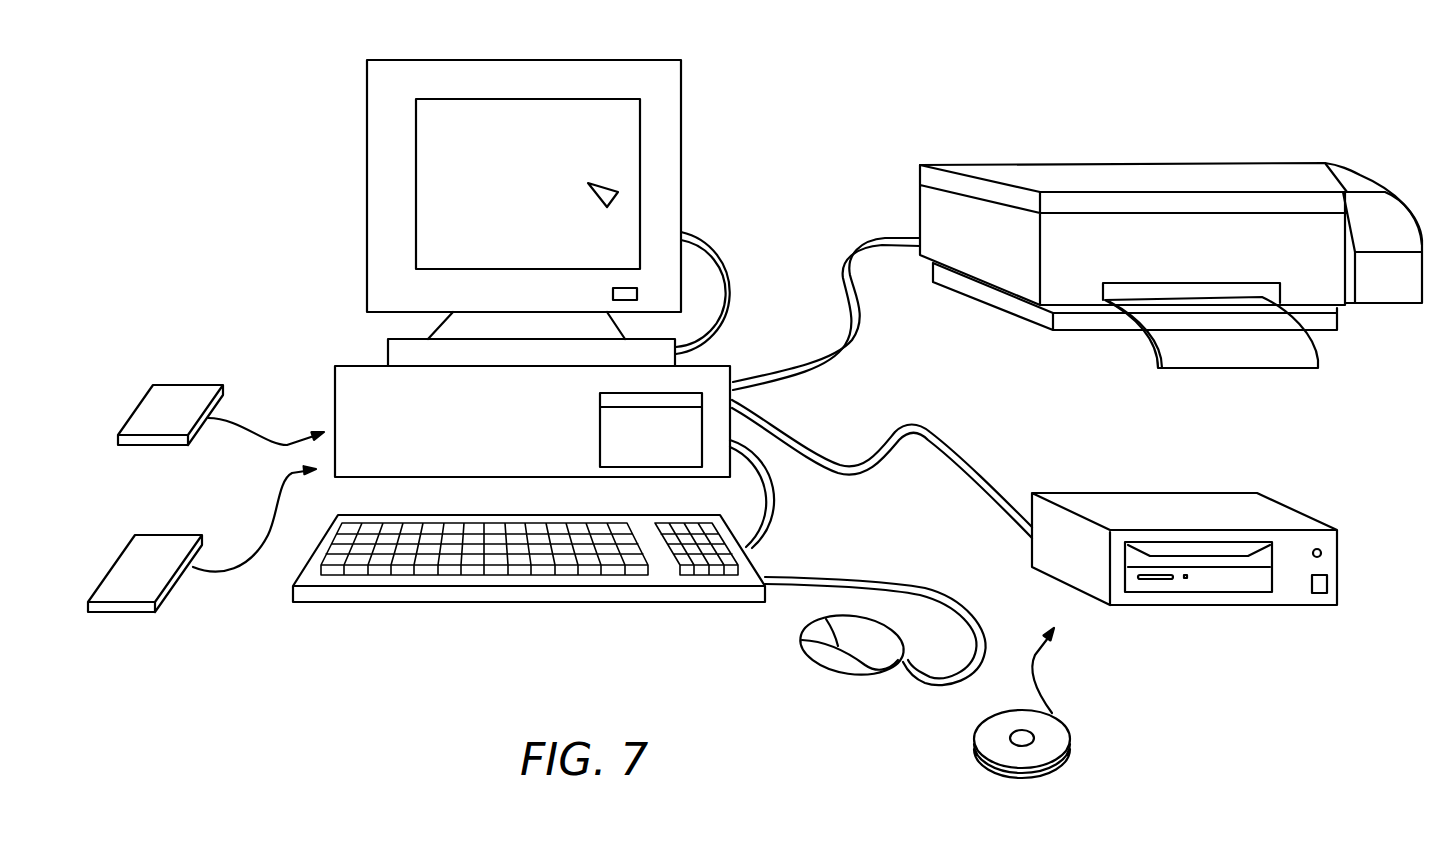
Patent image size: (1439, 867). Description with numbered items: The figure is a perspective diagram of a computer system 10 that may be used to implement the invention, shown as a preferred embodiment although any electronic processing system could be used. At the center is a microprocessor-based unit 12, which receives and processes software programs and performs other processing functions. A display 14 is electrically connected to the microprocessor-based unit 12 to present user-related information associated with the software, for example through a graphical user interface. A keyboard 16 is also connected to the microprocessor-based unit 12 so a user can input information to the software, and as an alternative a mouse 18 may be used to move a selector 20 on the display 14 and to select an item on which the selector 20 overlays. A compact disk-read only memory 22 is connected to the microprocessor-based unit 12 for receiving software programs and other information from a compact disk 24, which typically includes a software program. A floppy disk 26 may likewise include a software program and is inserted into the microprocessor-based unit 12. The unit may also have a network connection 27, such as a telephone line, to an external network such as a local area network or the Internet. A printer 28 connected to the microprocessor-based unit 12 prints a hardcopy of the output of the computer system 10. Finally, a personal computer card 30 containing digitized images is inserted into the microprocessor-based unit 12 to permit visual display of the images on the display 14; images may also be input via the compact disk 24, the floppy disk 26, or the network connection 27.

The computer system 10 is at (760, 110).
The microprocessor-based unit 12 is at (362, 366).
The display 14 is at (500, 60).
The keyboard 16 is at (342, 603).
The mouse 18 is at (842, 670).
The selector 20 is at (612, 186).
The compact disk-read only memory (CD-ROM) 22 is at (1147, 493).
The compact disk 24 is at (1070, 739).
The floppy disk 26 is at (144, 398).
The network connection 27 is at (335, 410).
The printer 28 is at (1125, 163).
The personal computer card (PC card) 30 is at (125, 550).